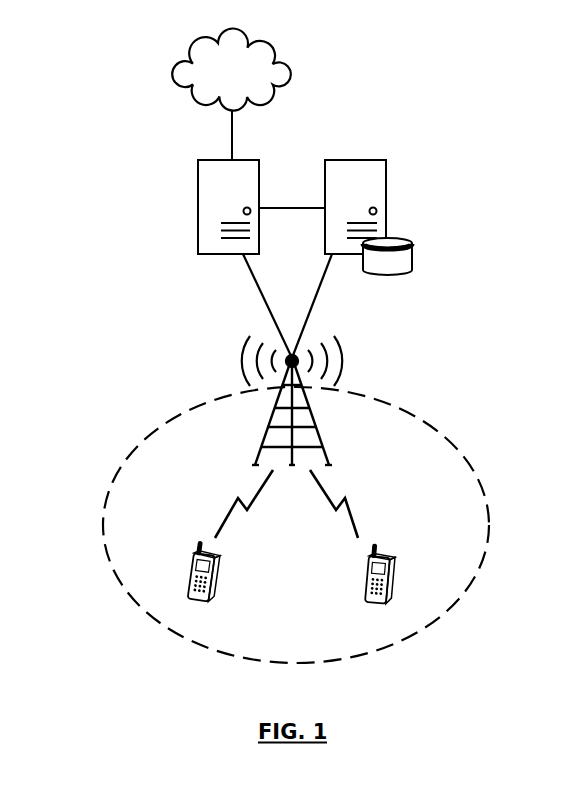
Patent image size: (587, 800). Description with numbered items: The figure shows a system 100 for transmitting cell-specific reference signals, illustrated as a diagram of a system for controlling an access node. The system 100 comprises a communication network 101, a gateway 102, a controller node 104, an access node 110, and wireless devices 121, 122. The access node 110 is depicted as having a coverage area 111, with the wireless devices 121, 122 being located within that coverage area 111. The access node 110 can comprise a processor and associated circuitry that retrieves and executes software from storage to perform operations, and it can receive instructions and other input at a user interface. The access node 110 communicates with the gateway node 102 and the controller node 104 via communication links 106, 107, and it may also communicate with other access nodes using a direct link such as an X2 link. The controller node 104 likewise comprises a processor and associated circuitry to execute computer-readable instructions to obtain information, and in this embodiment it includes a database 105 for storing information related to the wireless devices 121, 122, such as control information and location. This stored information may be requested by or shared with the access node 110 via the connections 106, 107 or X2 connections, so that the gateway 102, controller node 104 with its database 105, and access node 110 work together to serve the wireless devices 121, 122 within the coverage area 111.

The system 100 is at (343, 93).
The communication network 101 is at (251, 82).
The gateway 102 is at (199, 180).
The controller node 104 is at (386, 175).
The database 105 is at (412, 243).
The communication link 106 is at (258, 288).
The communication link 107 is at (321, 288).
The access node 110 is at (266, 446).
The coverage area 111 is at (131, 597).
The wireless device 121 is at (223, 580).
The wireless device 122 is at (397, 574).